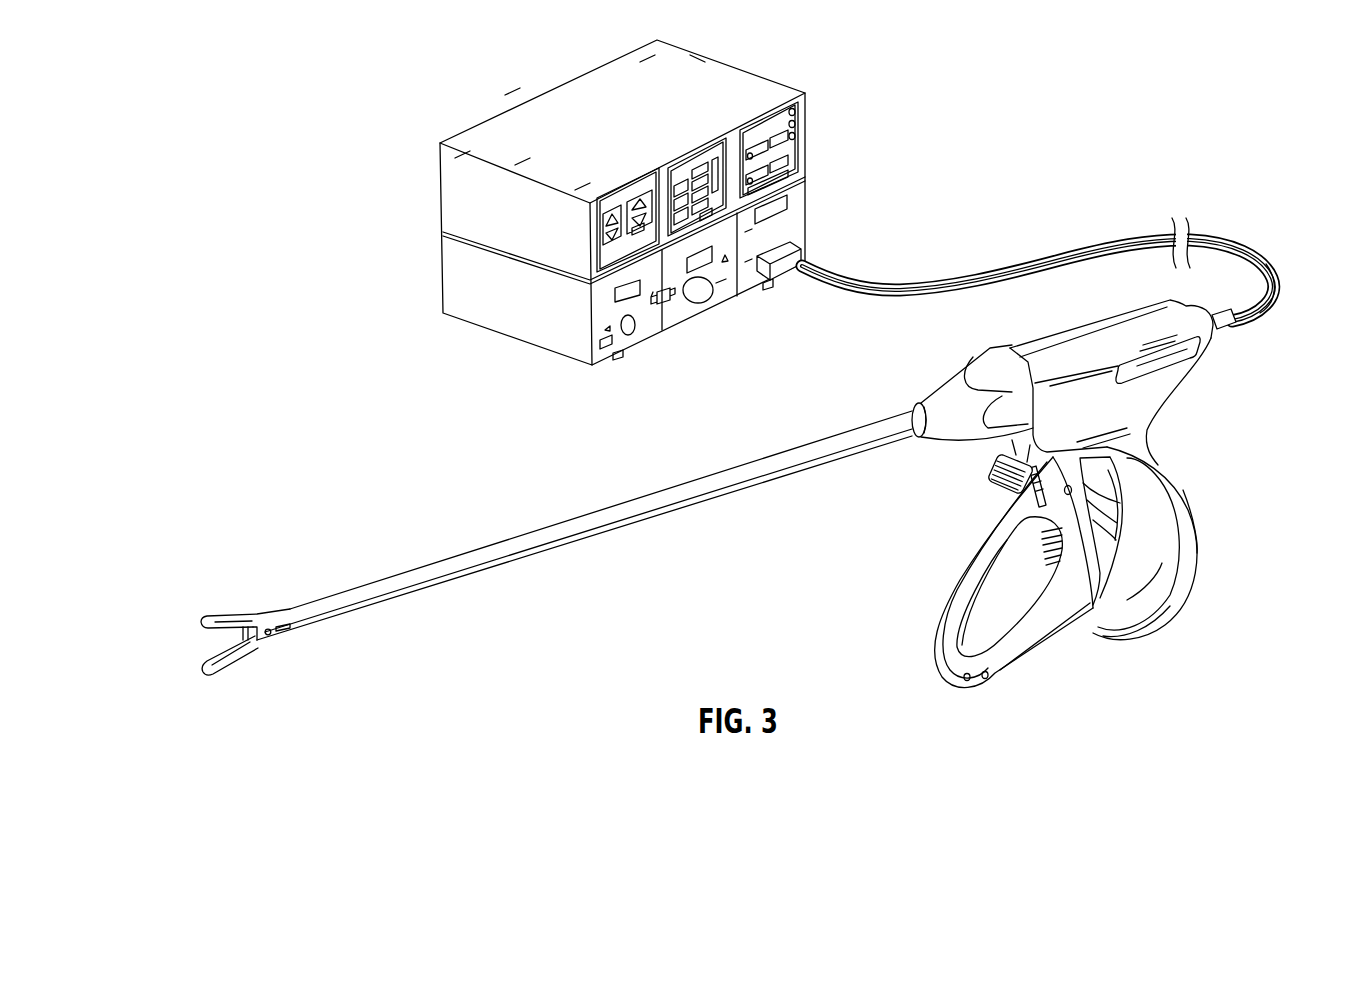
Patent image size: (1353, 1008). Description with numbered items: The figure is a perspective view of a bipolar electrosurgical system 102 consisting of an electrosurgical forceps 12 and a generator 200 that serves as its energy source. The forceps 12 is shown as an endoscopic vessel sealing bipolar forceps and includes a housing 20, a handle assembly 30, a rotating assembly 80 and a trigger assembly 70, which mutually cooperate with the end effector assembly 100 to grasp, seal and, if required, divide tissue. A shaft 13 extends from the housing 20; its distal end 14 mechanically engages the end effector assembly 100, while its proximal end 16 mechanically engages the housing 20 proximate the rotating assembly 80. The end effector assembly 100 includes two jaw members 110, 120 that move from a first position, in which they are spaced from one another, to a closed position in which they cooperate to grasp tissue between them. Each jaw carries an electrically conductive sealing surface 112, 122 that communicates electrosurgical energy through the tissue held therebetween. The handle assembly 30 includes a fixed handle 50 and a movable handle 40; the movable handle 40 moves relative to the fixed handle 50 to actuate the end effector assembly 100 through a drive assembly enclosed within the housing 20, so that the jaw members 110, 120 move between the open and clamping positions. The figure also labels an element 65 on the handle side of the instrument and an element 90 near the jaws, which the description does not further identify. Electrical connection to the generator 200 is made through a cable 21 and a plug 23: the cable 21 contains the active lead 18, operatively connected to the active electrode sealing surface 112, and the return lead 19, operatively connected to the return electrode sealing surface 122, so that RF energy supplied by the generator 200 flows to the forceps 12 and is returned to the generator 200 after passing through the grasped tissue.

The bipolar electrosurgical system 102 is at (730, 382).
The generator 200 is at (527, 88).
The plug 23 is at (784, 252).
The active lead 18 is at (1214, 240).
The cable 21 is at (1279, 294).
The return lead 19 is at (1243, 323).
The housing 20 is at (1098, 330).
The fixed handle 50 is at (1160, 623).
The latch member 65 is at (1100, 500).
The handle assembly 30 is at (1040, 647).
The movable handle 40 is at (977, 683).
The trigger assembly 70 is at (992, 478).
The rotating assembly 80 is at (957, 430).
The electrosurgical forceps 12 is at (650, 563).
The shaft 13 is at (753, 477).
The proximal end 16 is at (895, 421).
The distal end 14 is at (297, 622).
The end effector assembly 100 is at (243, 649).
The jaw member 110 is at (223, 617).
The electrically conductive sealing surface 112 is at (207, 623).
The jaw member 120 is at (210, 675).
The electrically conductive sealing surface 122 is at (210, 660).
The knife channel 90 is at (243, 653).